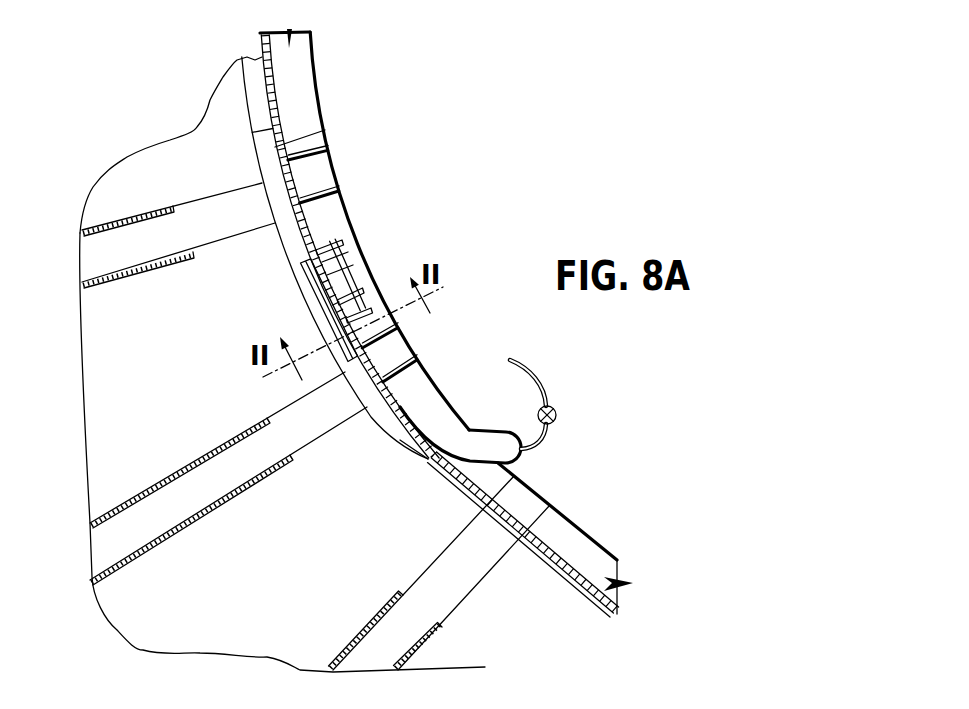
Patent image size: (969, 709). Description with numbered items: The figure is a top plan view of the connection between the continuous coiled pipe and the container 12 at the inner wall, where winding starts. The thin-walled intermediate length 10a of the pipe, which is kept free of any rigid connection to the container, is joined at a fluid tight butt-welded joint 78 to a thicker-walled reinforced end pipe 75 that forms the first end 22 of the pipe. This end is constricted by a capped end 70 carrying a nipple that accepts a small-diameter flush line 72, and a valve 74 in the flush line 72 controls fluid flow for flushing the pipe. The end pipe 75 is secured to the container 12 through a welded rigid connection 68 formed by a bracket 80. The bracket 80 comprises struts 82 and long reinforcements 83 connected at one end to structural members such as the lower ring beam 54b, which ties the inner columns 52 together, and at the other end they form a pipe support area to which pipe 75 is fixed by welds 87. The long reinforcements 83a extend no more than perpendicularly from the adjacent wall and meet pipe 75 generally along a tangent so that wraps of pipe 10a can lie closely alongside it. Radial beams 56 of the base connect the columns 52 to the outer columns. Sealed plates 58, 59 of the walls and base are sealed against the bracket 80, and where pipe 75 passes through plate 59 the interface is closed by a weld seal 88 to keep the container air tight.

The intermediate length of continuous pipe 10a is at (262, 92).
The container 12 is at (253, 593).
The first end of pipe 22 is at (448, 418).
The inner columns 52 is at (328, 180).
The lower ring beam 54b is at (583, 530).
The beams 56 is at (327, 437).
The plate 58 is at (127, 385).
The plate 59 is at (457, 483).
The rigid connection 68 is at (349, 262).
The capped end 70 is at (520, 452).
The flush line 72 is at (537, 380).
The valve 74 is at (557, 410).
The reinforced end pipe 75 is at (322, 138).
The fluid tight joint 78 is at (292, 118).
The bracket 80 is at (371, 254).
The struts 82 is at (365, 295).
The long reinforcements 83 is at (393, 327).
The long reinforcements 83a is at (335, 228).
The welds 87 is at (312, 275).
The seal 88 is at (423, 453).